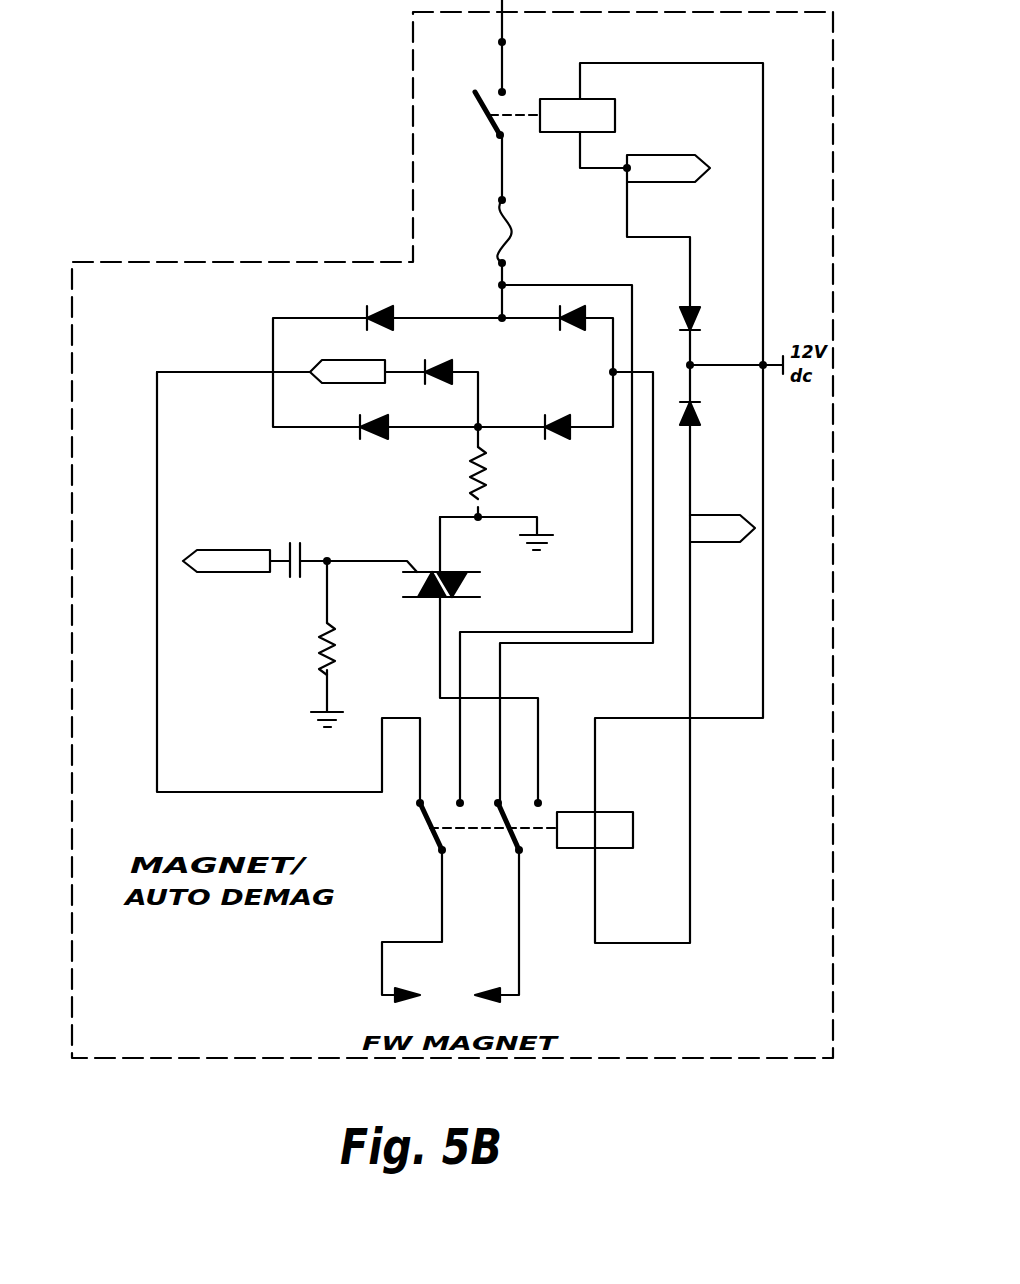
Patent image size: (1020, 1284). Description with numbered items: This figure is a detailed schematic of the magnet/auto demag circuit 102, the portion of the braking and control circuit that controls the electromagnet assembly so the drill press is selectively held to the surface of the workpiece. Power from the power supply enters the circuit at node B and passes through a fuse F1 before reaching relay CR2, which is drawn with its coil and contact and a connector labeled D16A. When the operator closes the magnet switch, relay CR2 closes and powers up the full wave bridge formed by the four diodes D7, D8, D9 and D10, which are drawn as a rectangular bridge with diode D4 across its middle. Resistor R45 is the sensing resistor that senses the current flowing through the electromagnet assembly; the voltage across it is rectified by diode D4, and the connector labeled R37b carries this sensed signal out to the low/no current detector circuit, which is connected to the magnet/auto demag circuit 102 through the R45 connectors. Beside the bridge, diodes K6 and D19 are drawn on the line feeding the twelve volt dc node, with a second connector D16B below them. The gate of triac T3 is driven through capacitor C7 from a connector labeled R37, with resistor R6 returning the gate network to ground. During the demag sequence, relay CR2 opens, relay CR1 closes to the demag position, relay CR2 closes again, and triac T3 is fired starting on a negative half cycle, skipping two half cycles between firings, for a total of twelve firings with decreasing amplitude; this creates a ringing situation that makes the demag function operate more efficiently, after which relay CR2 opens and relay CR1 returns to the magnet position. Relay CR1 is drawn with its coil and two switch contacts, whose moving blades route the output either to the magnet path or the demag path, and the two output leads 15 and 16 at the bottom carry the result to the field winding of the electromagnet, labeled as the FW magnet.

The magnet/auto demag circuit 102 is at (227, 262).
The node B is at (498, 42).
The fuse F1 1.25A F1 is at (542, 231).
The relay CR2 is at (649, 115).
The connection D16A is at (666, 168).
The diode K6 is at (721, 303).
The diode D19 is at (717, 413).
The connection D16B is at (722, 528).
The connection R45 flag R37b is at (347, 371).
The resistor R45 is at (499, 472).
The diode D9 is at (363, 319).
The diode D7 is at (538, 324).
The diode D4 is at (507, 383).
The diode D10 is at (371, 430).
The diode D8 is at (555, 429).
The triac T3 is at (477, 583).
The capacitor C7 is at (298, 549).
The connection R37 is at (226, 586).
The resistor R6 62K R6 is at (351, 636).
The relay CR1 is at (538, 843).
The FW magnet terminal 15 is at (366, 939).
The FW magnet terminal 16 is at (560, 939).